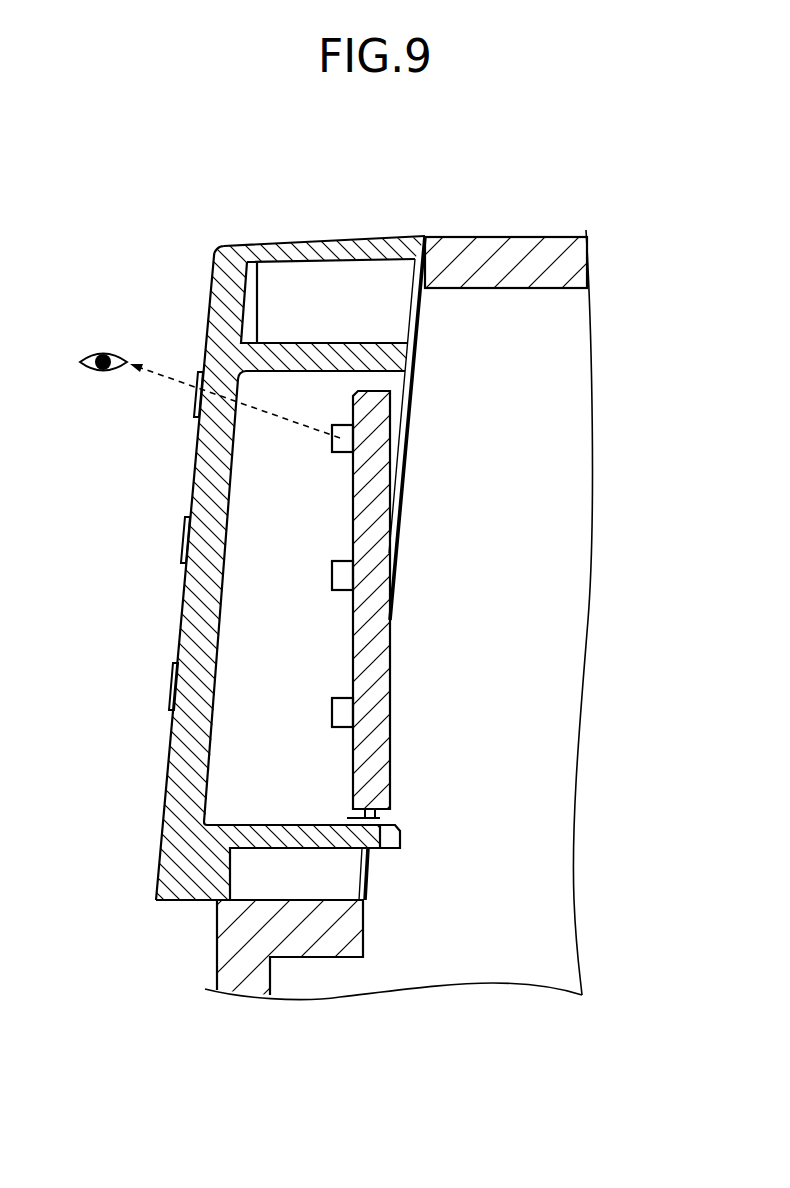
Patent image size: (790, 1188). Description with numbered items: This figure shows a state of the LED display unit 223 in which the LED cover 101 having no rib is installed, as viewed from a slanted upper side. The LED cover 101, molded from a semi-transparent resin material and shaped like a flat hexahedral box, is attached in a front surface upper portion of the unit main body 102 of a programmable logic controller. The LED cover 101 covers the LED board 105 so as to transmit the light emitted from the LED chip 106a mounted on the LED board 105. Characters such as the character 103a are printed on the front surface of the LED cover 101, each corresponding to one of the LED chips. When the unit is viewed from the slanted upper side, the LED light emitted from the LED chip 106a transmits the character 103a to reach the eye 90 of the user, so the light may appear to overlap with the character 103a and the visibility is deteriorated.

The eye 90 is at (93, 355).
The LED cover 101 is at (218, 283).
The unit main body 102 is at (518, 250).
The character 103a is at (194, 403).
The LED board 105 is at (372, 408).
The LED chip 106a is at (345, 438).
The LED display unit 223 is at (426, 210).